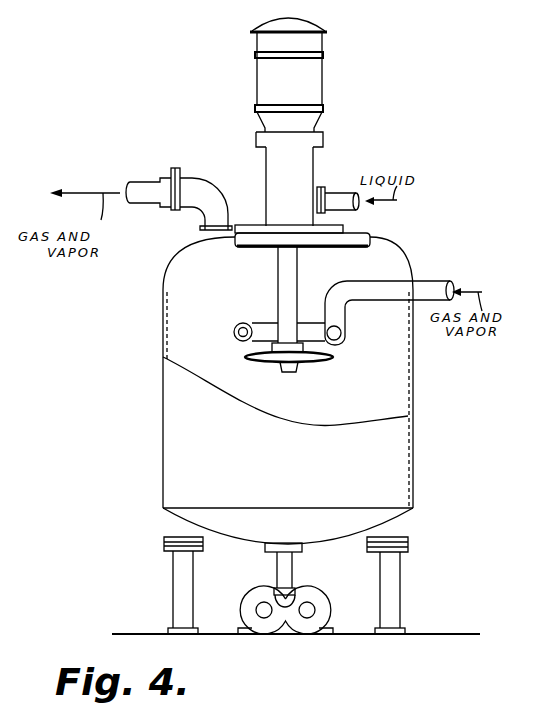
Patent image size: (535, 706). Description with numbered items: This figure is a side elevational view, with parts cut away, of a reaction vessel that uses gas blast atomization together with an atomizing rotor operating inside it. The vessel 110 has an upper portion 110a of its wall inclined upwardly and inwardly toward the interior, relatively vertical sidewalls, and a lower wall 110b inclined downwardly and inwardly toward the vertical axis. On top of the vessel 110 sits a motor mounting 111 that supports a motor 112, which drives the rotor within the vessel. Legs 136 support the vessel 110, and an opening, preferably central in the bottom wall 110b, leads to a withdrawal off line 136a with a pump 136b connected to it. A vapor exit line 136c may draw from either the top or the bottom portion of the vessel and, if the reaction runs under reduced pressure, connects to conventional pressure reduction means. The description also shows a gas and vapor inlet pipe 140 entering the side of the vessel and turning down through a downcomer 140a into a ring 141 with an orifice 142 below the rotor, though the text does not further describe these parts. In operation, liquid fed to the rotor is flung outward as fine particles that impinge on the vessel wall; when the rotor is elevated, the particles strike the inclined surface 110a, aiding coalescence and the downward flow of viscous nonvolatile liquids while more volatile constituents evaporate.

The vessel 110 is at (285, 380).
The upper portion of vessel wall 110a is at (392, 246).
The lower wall 110b is at (162, 509).
The motor mounting 111 is at (266, 171).
The motor 112 is at (307, 71).
The legs 136 is at (182, 584).
The withdrawal off line 136a is at (283, 567).
The pump 136b is at (269, 628).
The vapor exit line 136c is at (148, 190).
The gas and vapor inlet pipe 140 is at (390, 297).
The inlet pipe downcomer 140a is at (345, 311).
The sparger ring 141 is at (256, 324).
The sparger orifice 142 is at (264, 322).